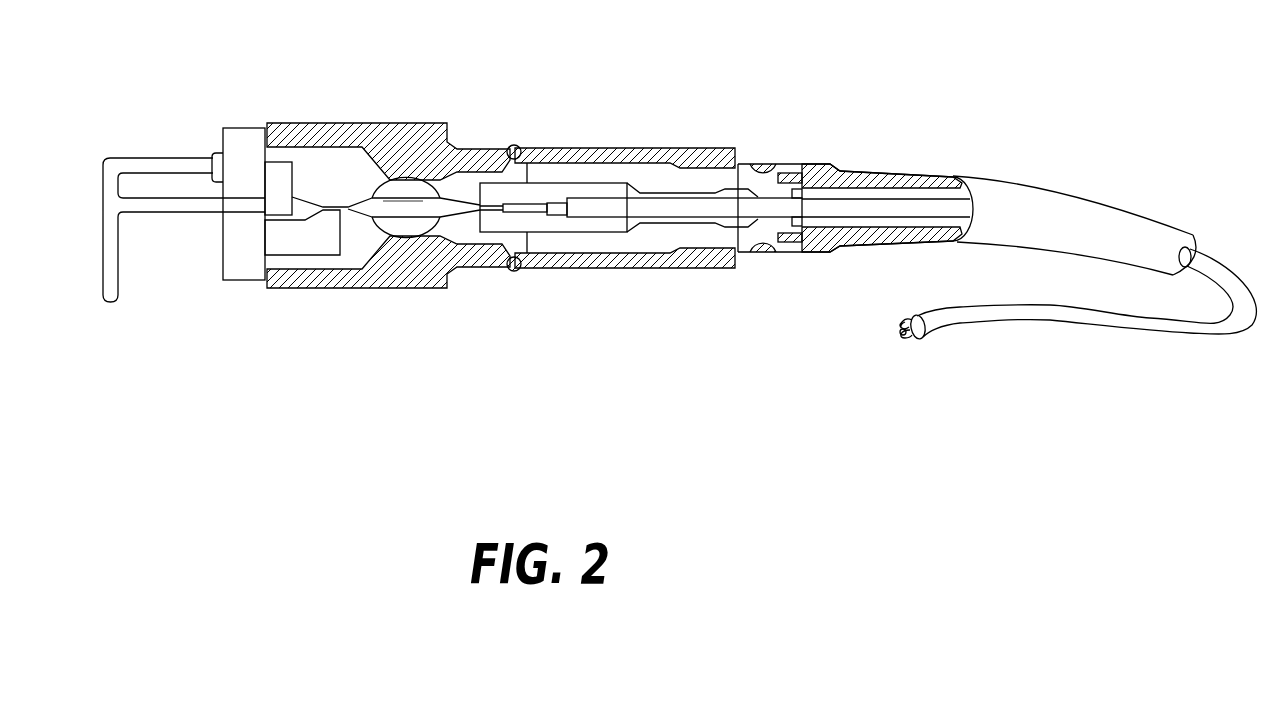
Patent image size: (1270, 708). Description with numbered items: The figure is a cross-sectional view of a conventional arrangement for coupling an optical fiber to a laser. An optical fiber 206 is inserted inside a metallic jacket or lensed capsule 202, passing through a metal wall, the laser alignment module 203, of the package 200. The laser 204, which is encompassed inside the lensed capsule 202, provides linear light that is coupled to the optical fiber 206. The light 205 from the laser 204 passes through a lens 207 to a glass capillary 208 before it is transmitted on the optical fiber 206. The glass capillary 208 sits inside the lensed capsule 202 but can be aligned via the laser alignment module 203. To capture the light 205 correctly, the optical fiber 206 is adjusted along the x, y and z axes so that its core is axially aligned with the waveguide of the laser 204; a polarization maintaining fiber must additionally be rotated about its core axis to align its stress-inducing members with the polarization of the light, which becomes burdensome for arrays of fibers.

The package 200 is at (605, 422).
The lensed capsule 202 is at (430, 272).
The laser alignment module 203 is at (622, 160).
The laser 204 is at (347, 207).
The light 205 is at (402, 208).
The optical fiber 206 is at (893, 333).
The lens 207 is at (412, 225).
The glass capillary 208 is at (538, 227).